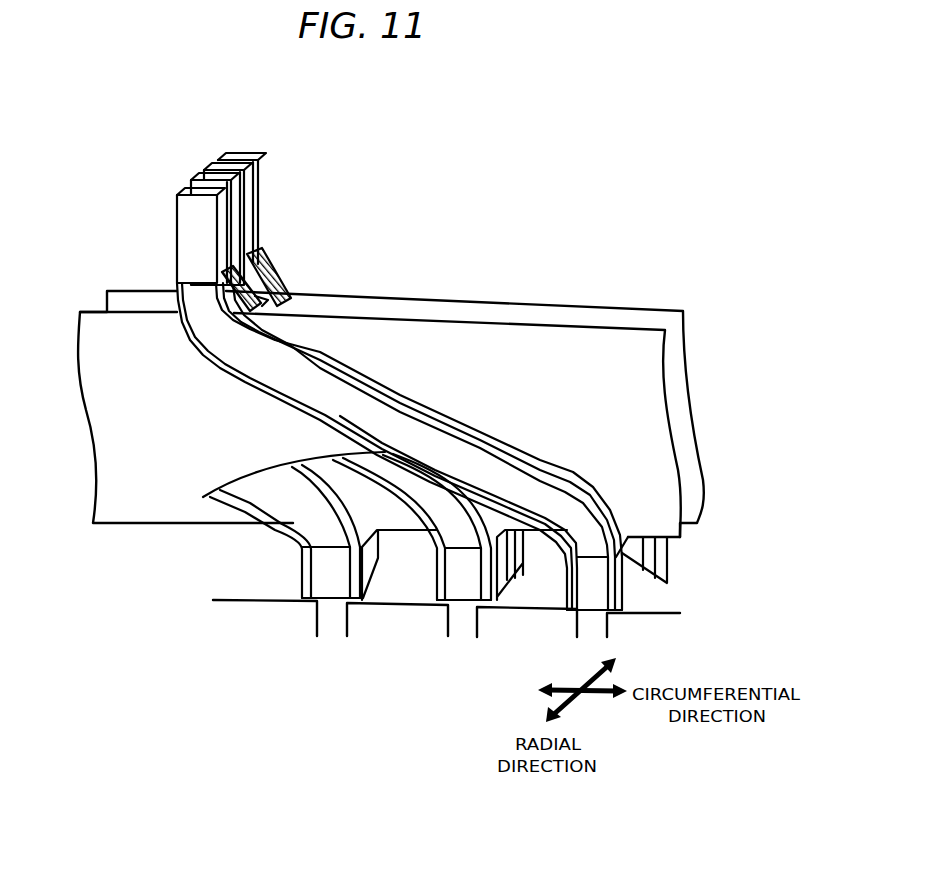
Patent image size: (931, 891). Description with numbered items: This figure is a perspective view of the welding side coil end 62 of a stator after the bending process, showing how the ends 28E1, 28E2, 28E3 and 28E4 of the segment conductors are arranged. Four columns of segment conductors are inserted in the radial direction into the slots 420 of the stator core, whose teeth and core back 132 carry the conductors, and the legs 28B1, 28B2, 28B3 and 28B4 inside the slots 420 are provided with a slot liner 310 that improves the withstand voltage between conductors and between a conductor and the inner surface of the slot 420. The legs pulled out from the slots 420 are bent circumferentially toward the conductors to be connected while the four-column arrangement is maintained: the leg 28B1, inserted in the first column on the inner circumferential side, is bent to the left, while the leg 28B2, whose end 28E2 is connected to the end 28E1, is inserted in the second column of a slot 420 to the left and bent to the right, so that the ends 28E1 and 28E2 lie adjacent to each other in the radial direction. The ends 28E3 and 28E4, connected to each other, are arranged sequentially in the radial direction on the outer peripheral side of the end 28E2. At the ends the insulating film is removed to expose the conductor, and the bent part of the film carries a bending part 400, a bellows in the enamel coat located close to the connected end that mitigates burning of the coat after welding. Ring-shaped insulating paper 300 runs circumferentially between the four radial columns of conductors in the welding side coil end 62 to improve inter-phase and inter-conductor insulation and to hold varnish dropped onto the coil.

The welding side coil end 62 is at (541, 209).
The insulating paper 300 is at (608, 330).
The slot liner 310 is at (603, 582).
The core back / yoke 132 is at (257, 573).
The slot 420 is at (453, 622).
The bending part 400 is at (270, 297).
The end 28E1 is at (190, 262).
The end 28E2 is at (195, 181).
The end 28E3 is at (218, 172).
The end 28E4 is at (240, 161).
The leg 28B1 is at (433, 438).
The leg 28B2 is at (250, 290).
The leg 28B3 is at (270, 310).
The leg 28B4 is at (265, 270).